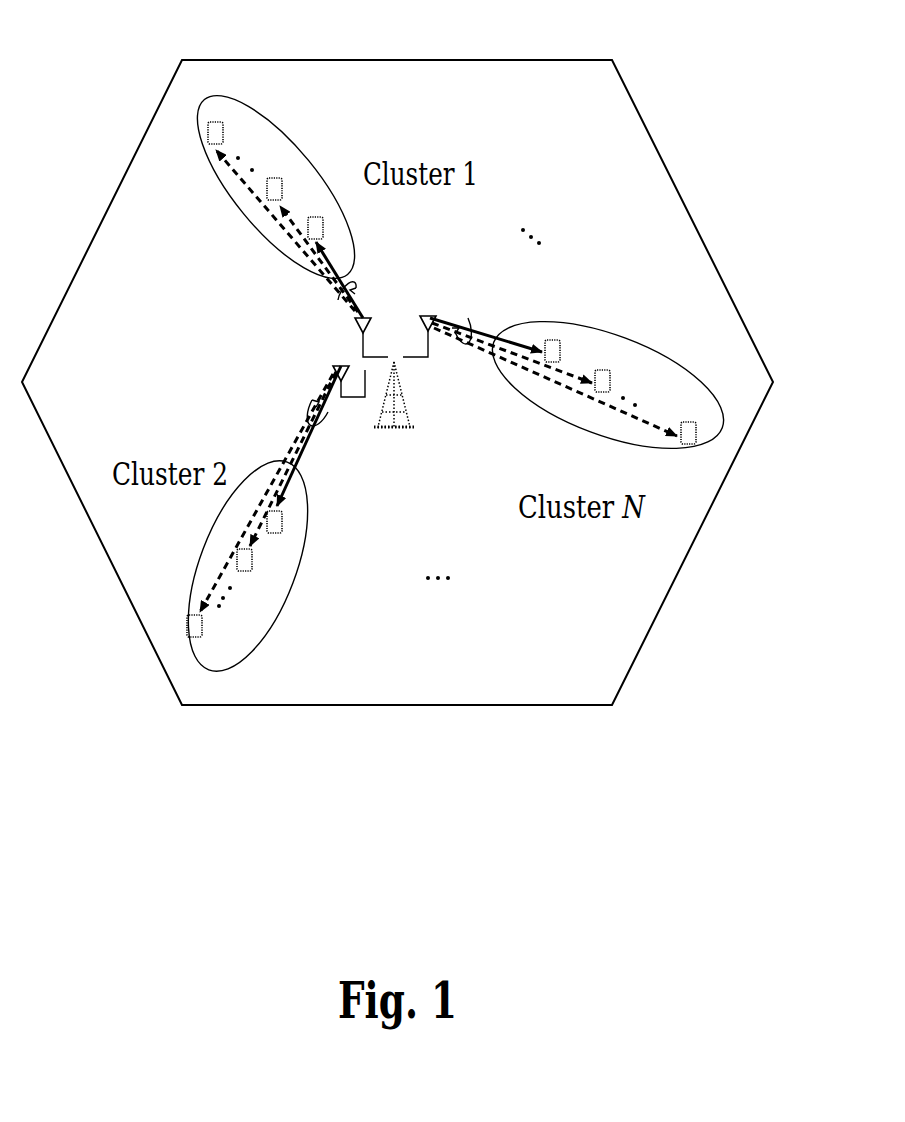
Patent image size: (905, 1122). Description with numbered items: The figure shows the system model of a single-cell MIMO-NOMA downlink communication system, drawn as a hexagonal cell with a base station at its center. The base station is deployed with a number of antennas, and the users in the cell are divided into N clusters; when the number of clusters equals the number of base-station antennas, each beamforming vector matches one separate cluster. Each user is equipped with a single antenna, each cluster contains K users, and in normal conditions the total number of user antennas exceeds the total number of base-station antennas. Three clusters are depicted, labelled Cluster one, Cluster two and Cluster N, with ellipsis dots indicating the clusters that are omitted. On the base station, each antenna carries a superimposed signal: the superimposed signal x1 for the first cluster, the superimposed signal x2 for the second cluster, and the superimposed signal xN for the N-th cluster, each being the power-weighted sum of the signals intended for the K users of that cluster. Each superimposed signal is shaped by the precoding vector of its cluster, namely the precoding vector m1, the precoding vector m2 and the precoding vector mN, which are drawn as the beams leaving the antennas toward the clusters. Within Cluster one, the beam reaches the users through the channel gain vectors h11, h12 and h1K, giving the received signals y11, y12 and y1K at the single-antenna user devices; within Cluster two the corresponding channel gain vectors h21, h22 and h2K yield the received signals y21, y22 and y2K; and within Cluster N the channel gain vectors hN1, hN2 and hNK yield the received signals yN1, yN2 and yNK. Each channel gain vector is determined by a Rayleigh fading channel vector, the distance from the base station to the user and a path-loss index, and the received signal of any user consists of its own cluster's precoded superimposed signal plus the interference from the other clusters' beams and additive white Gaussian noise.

The superimposed signal on antenna 1 x1 is at (371, 337).
The superimposed signal on antenna 2 x2 is at (360, 381).
The superimposed signal on antenna N xN is at (419, 336).
The precoding vector for cluster 1 m1 is at (335, 281).
The precoding vector for cluster 2 m2 is at (319, 436).
The precoding vector for cluster N mN is at (486, 321).
The channel gain vector of user 1 in cluster 1 h11 is at (340, 245).
The channel gain vector of user 2 in cluster 1 h12 is at (319, 251).
The channel gain vector of user K in cluster 1 h1K is at (285, 224).
The channel gain vector of user 1 in cluster 2 h21 is at (298, 503).
The channel gain vector of user 2 in cluster 2 h22 is at (293, 467).
The channel gain vector of user K in cluster 2 h2K is at (266, 499).
The channel gain vector of user 1 in cluster N hN1 is at (523, 337).
The channel gain vector of user 2 in cluster N hN2 is at (513, 353).
The channel gain vector of user K in cluster N hNK is at (555, 382).
The received signal of user 1 in cluster 1 y11 is at (324, 218).
The received signal of user 2 in cluster 1 y12 is at (281, 177).
The received signal of user K in cluster 1 y1K is at (221, 122).
The received signal of user 1 in cluster 2 y21 is at (286, 533).
The received signal of user 2 in cluster 2 y22 is at (250, 573).
The received signal of user K in cluster 2 y2K is at (203, 639).
The received signal of user 1 in cluster N yN1 is at (562, 341).
The received signal of user 2 in cluster N yN2 is at (615, 371).
The received signal of user K in cluster N yNK is at (698, 424).